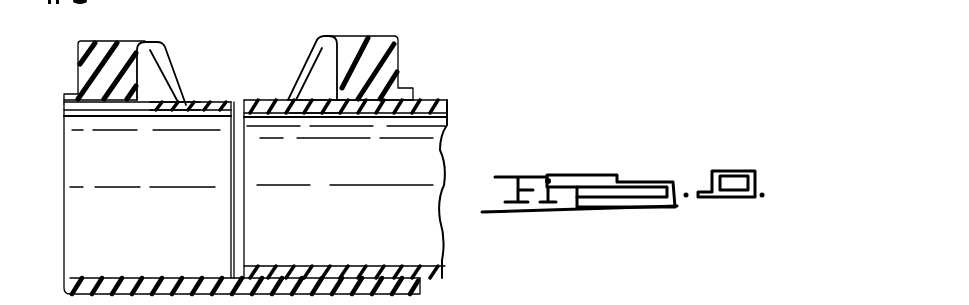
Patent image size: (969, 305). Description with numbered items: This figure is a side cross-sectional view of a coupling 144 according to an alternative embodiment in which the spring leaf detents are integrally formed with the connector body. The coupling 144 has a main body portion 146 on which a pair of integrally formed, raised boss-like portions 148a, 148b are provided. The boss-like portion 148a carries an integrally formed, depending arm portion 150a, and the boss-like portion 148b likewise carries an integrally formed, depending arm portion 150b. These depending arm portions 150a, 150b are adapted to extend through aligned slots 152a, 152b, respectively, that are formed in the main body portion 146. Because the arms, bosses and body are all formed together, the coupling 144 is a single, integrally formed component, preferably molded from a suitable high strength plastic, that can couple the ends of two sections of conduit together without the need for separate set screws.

The coupling 144 is at (464, 147).
The main body portion 146 is at (240, 88).
The boss-like portion 148a is at (95, 72).
The boss-like portion 148b is at (394, 44).
The depending arm portion 150a is at (169, 64).
The depending arm portion 150b is at (301, 63).
The slot 152a is at (165, 110).
The slot 152b is at (313, 103).